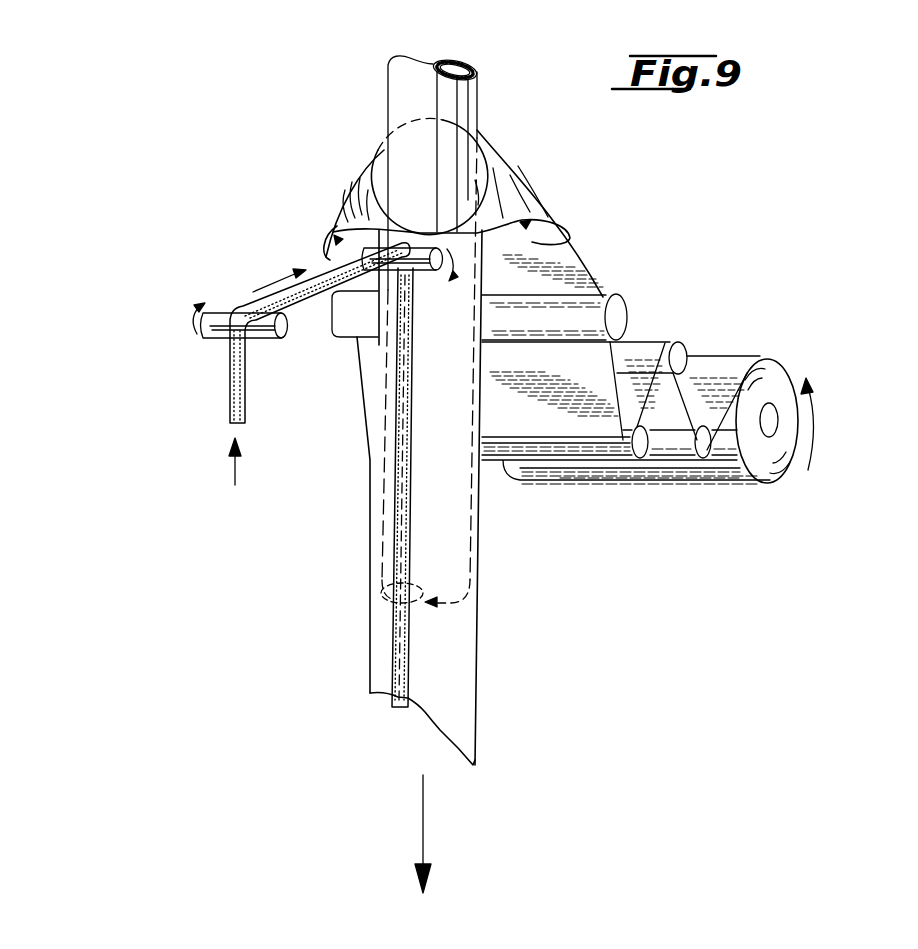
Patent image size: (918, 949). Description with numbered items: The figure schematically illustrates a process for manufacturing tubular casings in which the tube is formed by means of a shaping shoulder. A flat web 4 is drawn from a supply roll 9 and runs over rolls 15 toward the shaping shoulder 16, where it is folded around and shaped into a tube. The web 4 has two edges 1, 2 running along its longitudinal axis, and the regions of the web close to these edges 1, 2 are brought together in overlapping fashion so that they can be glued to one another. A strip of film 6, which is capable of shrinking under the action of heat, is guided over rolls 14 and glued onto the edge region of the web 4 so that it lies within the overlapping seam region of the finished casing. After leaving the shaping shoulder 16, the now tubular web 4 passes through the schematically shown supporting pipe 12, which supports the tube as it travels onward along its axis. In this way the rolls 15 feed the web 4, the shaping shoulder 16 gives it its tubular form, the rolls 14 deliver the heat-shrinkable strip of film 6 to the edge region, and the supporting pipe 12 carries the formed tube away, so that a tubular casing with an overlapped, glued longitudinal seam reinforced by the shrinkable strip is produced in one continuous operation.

The edge 1 is at (571, 239).
The edge 2 is at (328, 257).
The web 4 is at (557, 433).
The strip of film 6 is at (230, 389).
The supply roll 9 is at (782, 380).
The supporting pipe 12 is at (398, 104).
The rolls 14 is at (261, 327).
The rolls 15 is at (622, 308).
The shaping shoulder 16 is at (530, 206).